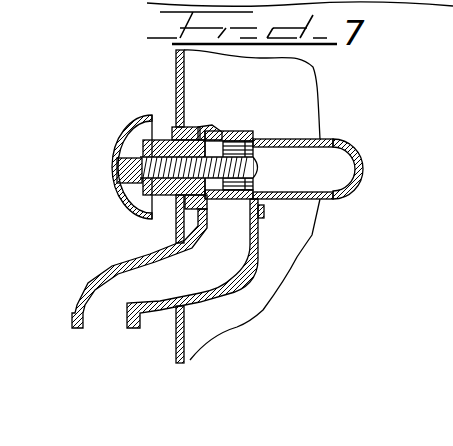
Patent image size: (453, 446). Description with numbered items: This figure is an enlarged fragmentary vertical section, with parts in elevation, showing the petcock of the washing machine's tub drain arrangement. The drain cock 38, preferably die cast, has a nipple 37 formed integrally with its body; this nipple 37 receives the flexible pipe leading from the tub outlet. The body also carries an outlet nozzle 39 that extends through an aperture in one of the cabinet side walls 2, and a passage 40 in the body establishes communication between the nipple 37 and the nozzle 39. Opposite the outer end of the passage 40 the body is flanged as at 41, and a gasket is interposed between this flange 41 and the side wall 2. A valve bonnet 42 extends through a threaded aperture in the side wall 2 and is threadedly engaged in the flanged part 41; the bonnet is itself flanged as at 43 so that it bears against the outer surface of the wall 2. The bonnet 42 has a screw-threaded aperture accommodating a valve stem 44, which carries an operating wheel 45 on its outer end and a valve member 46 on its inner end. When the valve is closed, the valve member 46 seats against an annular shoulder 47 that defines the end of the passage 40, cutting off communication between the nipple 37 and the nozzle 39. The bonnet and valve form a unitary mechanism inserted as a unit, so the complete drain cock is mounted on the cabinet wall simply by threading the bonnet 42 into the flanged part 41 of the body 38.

The side plate 2 is at (262, 270).
The nipple 37 is at (364, 168).
The drain cock 38 is at (264, 218).
The outlet nozzle 39 is at (84, 293).
The passage 40 is at (291, 172).
The flange 41 is at (186, 128).
The valve bonnet 42 is at (162, 152).
The bonnet flange 43 is at (172, 127).
The valve stem 44 is at (150, 200).
The operating wheel 45 is at (112, 135).
The valve member 46 is at (231, 155).
The annular shoulder 47 is at (256, 142).